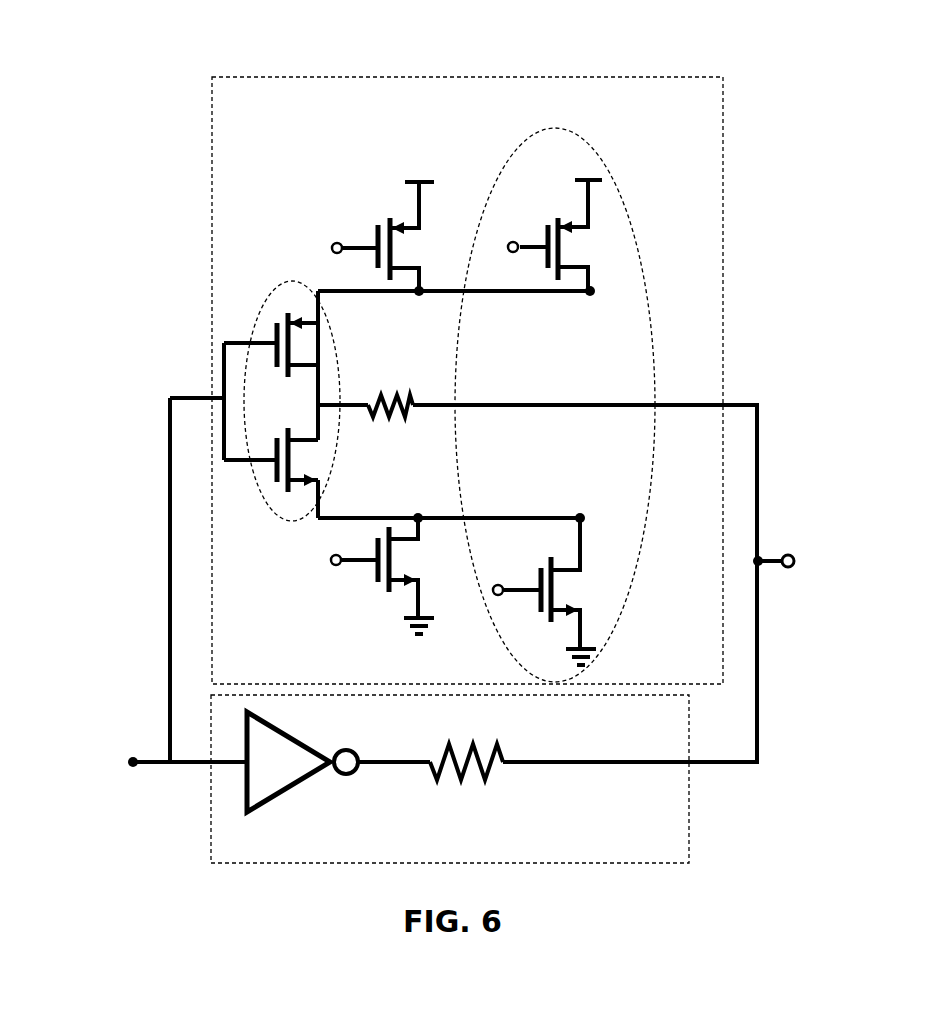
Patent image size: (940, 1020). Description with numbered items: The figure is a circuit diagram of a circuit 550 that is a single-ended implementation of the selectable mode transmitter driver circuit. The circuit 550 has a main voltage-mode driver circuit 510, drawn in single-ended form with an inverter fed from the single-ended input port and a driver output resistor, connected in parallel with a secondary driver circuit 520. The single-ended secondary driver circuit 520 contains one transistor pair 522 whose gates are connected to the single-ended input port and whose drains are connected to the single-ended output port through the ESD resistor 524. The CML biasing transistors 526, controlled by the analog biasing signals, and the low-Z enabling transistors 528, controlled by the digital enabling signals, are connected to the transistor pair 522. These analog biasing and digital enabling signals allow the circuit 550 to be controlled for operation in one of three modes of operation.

The circuit 550 is at (143, 135).
The secondary driver circuit 520 is at (578, 77).
The voltage-mode driver circuit 510 is at (270, 863).
The transistor pair 522 is at (250, 327).
The ESD resistor 524 is at (392, 412).
The CML biasing transistors 526 is at (643, 268).
The low-Z enabling transistors 528 is at (373, 212).